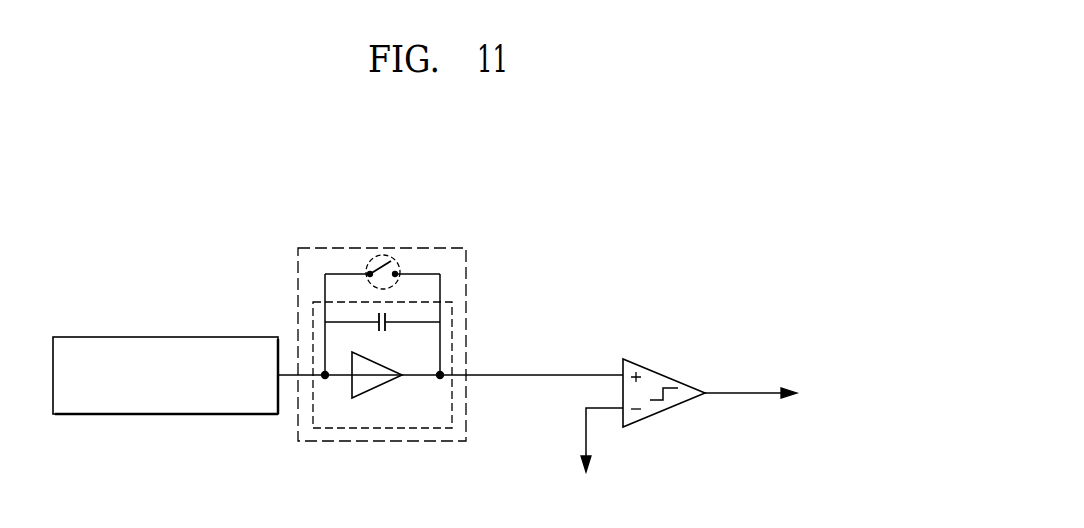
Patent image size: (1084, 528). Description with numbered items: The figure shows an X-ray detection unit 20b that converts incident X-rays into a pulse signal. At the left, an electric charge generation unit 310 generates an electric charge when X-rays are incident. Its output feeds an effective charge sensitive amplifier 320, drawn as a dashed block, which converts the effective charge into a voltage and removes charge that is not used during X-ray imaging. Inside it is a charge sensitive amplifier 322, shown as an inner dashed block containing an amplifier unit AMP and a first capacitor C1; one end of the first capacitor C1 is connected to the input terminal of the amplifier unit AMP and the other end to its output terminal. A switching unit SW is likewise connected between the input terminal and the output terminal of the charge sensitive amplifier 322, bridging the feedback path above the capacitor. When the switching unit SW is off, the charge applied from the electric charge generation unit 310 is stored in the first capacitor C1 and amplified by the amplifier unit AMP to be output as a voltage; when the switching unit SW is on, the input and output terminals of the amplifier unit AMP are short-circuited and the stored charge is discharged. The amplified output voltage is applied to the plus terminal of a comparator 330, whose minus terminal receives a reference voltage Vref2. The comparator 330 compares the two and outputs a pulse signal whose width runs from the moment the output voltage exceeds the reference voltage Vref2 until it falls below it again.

The X-ray detection unit 20b is at (642, 185).
The electric charge generation unit 310 is at (165, 336).
The effective charge sensitive amplifier 320 is at (443, 247).
The charge sensitive amplifier 322 is at (413, 481).
The comparator 330 is at (665, 374).
The switching unit SW is at (383, 253).
The first capacitor C1 is at (373, 327).
The amplifier unit AMP is at (378, 390).
The reference voltage Vref2 is at (589, 490).